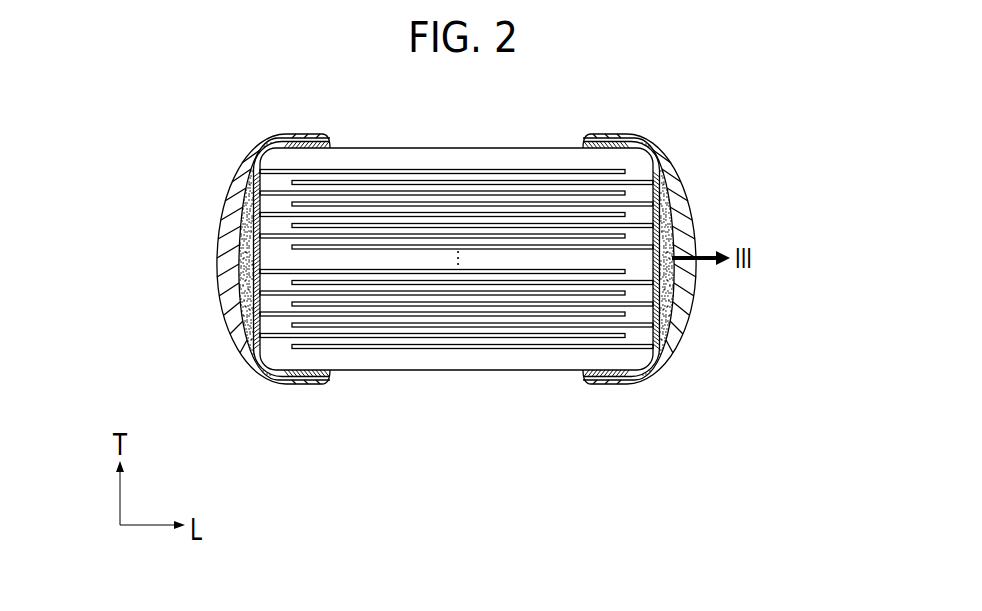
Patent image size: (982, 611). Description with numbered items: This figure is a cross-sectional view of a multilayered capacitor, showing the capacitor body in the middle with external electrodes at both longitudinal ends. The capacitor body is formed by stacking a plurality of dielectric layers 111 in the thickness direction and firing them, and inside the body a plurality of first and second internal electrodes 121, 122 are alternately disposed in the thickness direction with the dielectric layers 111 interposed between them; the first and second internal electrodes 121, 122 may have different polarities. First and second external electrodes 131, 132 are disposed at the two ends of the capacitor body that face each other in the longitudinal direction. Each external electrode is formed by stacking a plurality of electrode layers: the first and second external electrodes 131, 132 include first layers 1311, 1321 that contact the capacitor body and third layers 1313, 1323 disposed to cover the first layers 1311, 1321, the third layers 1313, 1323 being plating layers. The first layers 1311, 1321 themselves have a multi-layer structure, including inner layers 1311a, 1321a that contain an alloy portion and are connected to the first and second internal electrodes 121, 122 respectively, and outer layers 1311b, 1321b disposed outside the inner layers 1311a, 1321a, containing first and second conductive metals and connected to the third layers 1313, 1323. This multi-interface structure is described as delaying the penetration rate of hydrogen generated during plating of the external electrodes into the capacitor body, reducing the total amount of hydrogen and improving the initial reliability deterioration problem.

The dielectric layer 111 is at (636, 162).
The first internal electrode 121 is at (525, 234).
The second internal electrode 122 is at (490, 244).
The first external electrode 131 is at (181, 259).
The first layer 1311 is at (206, 259).
The inner layer 1311a is at (247, 222).
The outer layer 1311b is at (241, 268).
The third layer 1313 is at (223, 307).
The second external electrode 132 is at (735, 259).
The first layer 1321 is at (708, 259).
The inner layer 1321a is at (666, 300).
The outer layer 1321b is at (674, 308).
The third layer 1323 is at (690, 344).